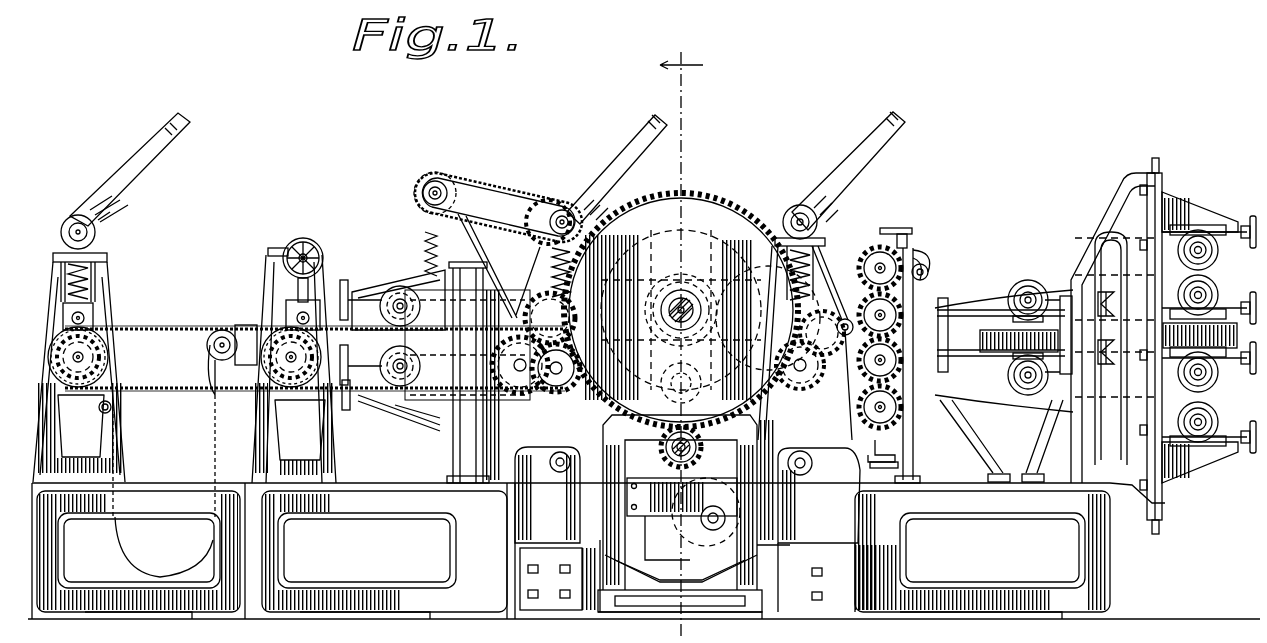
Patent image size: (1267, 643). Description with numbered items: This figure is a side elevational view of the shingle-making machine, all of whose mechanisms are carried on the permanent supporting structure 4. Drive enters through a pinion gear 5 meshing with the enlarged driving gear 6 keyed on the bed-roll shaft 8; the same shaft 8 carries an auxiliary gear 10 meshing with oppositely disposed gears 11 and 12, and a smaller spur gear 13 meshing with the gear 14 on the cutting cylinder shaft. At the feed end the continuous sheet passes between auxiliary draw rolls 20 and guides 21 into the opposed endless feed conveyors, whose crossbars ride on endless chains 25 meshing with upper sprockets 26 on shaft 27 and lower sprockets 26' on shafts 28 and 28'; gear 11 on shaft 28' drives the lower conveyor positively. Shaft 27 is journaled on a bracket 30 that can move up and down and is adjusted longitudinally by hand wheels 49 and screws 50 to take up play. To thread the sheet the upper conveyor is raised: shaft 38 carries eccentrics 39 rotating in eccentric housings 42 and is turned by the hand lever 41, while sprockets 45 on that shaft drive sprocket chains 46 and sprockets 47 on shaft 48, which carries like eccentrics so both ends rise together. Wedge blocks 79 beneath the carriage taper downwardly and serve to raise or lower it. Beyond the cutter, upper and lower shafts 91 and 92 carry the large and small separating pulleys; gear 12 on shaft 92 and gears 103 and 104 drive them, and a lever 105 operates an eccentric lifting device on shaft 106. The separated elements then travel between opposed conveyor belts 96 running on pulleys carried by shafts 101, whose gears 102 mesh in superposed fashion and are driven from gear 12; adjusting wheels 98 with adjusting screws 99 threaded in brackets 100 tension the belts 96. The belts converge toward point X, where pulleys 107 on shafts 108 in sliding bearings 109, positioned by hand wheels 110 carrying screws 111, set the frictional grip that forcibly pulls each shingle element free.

The supporting structure 4 is at (1218, 563).
The pinion gear 5 is at (700, 447).
The driving gear 6 is at (656, 198).
The bed-roll shaft 8 is at (670, 298).
The auxiliary gear 10 is at (678, 240).
The gear 11 is at (520, 412).
The gear 12 is at (819, 530).
The spur gear 13 is at (690, 290).
The gear 14 is at (680, 513).
The auxiliary draw rolls 20 is at (90, 300).
The guides 21 is at (215, 332).
The endless chains 25 is at (322, 345).
The sprockets 26 is at (435, 325).
The sprockets 26' is at (417, 432).
The shaft 27 is at (385, 312).
The shaft 28 is at (396, 424).
The shaft 28' is at (547, 495).
The bracket 30 is at (390, 285).
The shaft 38 is at (565, 210).
The eccentrics 39 is at (105, 218).
The hand lever 41 is at (615, 165).
The eccentric housing 42 is at (74, 215).
The sprockets 45 is at (548, 200).
The sprocket chains 46 is at (506, 186).
The sprockets 47 is at (498, 245).
The shaft 48 is at (438, 182).
The hand wheels 49 is at (380, 364).
The screws 50 is at (351, 401).
The wedge blocks 79 is at (681, 573).
The shaft 91 is at (780, 300).
The shaft 92 is at (792, 366).
The conveyor belts 96 is at (1020, 285).
The adjusting wheels 98 is at (1209, 338).
The adjusting screws 99 is at (1206, 335).
The brackets 100 is at (1190, 215).
The shafts 101 is at (920, 262).
The gears 102 is at (876, 262).
The gear 103 is at (822, 333).
The gear 104 is at (845, 320).
The lever 105 is at (878, 160).
The shaft 106 is at (793, 210).
The pulleys 107 is at (1045, 288).
The shafts 108 is at (1047, 337).
The sliding bearing 109 is at (1012, 312).
The hand wheels 110 is at (1113, 328).
The screws 111 is at (1019, 343).
The point X is at (1030, 233).